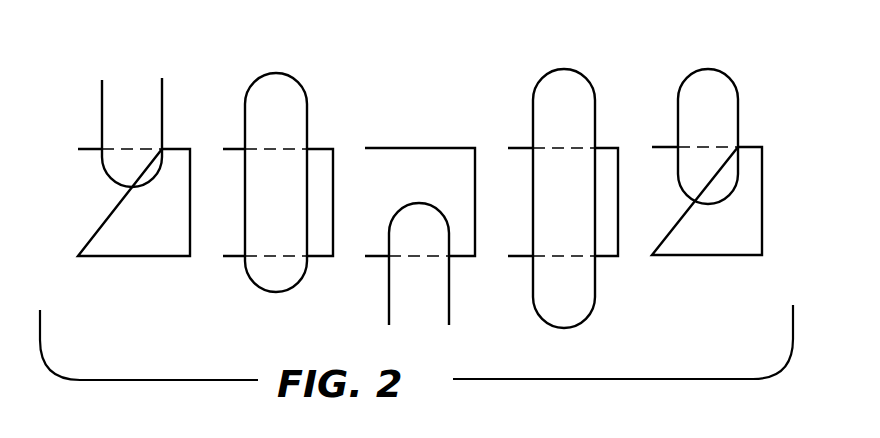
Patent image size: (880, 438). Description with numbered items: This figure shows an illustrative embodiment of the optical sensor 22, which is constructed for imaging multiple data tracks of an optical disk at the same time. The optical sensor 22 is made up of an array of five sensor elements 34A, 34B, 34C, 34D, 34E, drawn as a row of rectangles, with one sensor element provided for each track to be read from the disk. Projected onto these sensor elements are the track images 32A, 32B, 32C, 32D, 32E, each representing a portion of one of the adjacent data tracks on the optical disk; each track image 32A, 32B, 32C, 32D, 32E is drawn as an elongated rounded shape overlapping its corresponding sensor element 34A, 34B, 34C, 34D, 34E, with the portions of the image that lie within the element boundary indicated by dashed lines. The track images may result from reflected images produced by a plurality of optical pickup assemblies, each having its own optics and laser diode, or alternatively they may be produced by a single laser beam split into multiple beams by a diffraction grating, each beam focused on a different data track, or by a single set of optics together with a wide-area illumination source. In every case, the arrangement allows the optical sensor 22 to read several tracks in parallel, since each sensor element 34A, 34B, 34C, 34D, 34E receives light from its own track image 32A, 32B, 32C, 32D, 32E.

The optical sensor 22 is at (444, 74).
The track image 32A is at (165, 108).
The track image 32B is at (293, 73).
The track image 32C is at (412, 203).
The track image 32D is at (530, 112).
The track image 32E is at (678, 90).
The sensor element 34A is at (138, 256).
The sensor element 34B is at (233, 256).
The sensor element 34C is at (465, 256).
The sensor element 34D is at (608, 256).
The sensor element 34E is at (690, 255).